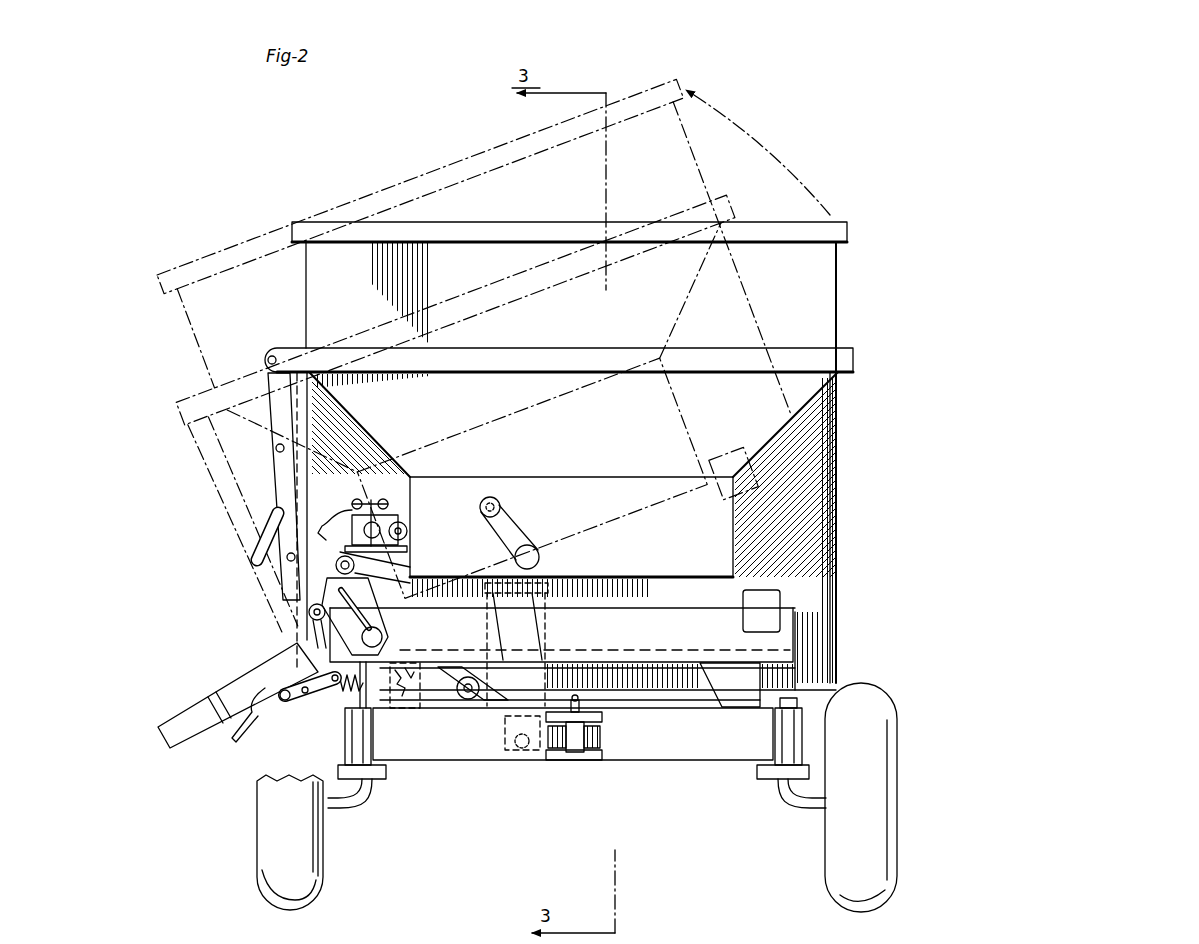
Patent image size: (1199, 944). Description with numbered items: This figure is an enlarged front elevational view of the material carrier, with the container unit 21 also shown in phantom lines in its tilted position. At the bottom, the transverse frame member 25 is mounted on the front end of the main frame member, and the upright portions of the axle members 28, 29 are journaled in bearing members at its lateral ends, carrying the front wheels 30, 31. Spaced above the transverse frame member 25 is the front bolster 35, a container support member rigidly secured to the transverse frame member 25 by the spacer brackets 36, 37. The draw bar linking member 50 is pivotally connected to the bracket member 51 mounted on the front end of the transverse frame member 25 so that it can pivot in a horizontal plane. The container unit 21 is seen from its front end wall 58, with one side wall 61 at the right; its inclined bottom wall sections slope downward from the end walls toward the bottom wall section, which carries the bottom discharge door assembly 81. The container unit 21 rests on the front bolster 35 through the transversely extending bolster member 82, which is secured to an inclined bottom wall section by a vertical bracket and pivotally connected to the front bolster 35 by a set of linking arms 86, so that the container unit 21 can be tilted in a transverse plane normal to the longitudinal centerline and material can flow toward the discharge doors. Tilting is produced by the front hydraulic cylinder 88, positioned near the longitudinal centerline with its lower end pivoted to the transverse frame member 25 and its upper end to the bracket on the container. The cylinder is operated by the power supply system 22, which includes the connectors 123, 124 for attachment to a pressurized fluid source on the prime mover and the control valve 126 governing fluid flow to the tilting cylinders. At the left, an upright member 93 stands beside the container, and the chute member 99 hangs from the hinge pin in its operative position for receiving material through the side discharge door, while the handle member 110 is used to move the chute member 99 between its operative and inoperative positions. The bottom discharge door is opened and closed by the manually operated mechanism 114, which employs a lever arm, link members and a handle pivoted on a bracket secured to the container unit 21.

The container unit 21 is at (440, 162).
The power supply system 22 is at (384, 513).
The transverse frame member 25 is at (462, 753).
The axle member 28 is at (336, 806).
The axle member 29 is at (775, 800).
The front wheel 30 is at (256, 857).
The front wheel 31 is at (876, 833).
The front bolster 35 is at (628, 656).
The spacer bracket 36 is at (415, 703).
The spacer bracket 37 is at (738, 703).
The linking member 50 is at (606, 743).
The bracket member 51 is at (578, 759).
The front end wall 58 is at (594, 455).
The side wall 61 is at (838, 299).
The bottom discharge door assembly 81 is at (338, 704).
The bolster member 82 is at (637, 583).
The linking arms 86 is at (392, 629).
The front hydraulic cylinder 88 is at (556, 646).
The upright post 93 is at (268, 481).
The chute member 99 is at (252, 660).
The handle member 110 is at (246, 723).
The manually operated mechanism 114 is at (305, 598).
The connector 123 is at (407, 529).
The connector 124 is at (333, 563).
The control valve 126 is at (366, 498).